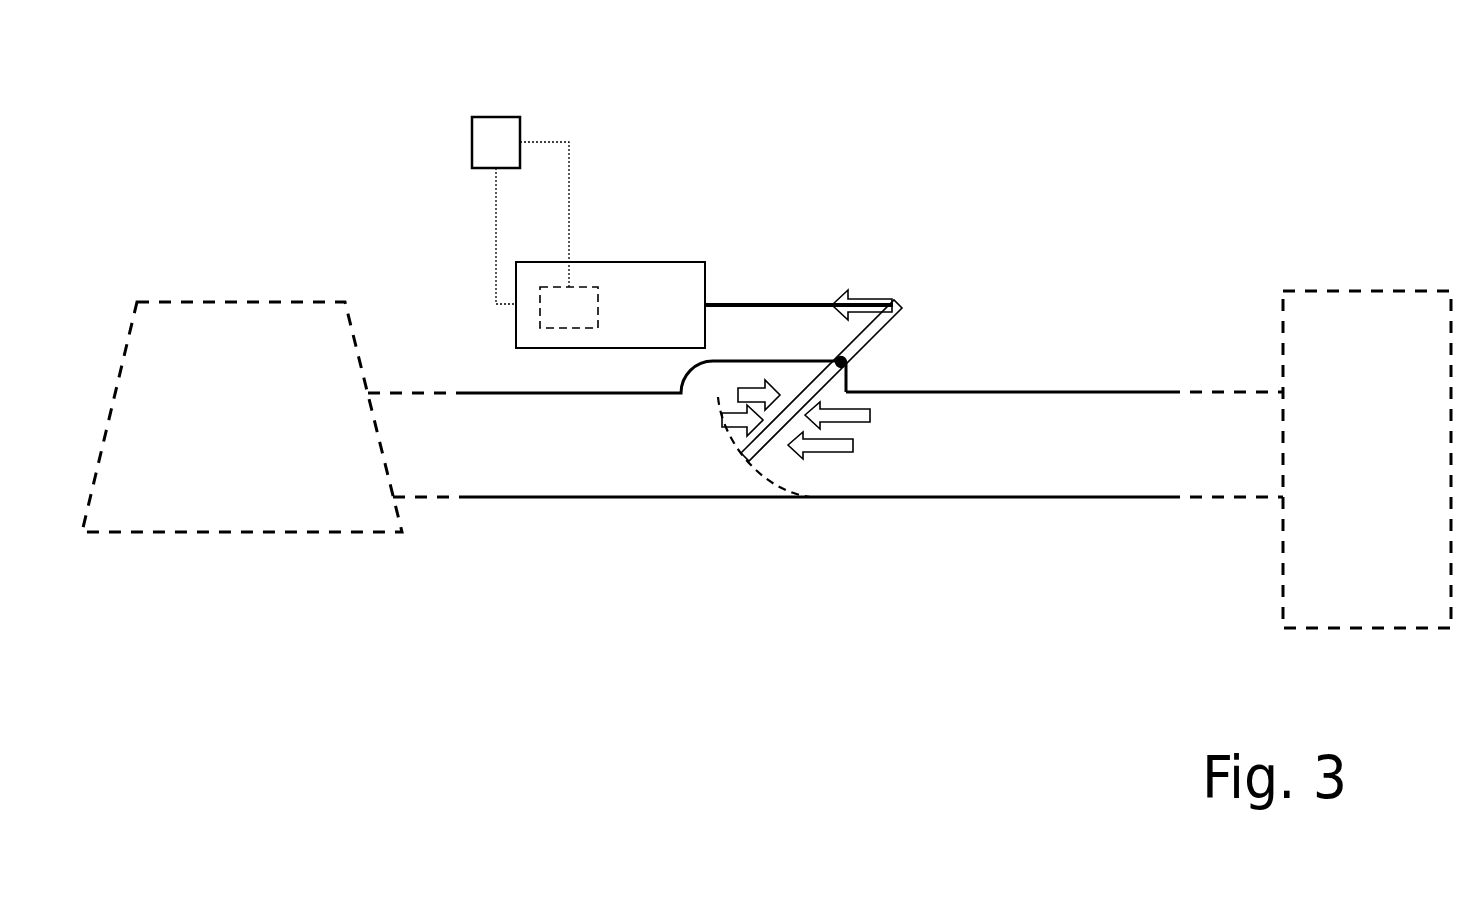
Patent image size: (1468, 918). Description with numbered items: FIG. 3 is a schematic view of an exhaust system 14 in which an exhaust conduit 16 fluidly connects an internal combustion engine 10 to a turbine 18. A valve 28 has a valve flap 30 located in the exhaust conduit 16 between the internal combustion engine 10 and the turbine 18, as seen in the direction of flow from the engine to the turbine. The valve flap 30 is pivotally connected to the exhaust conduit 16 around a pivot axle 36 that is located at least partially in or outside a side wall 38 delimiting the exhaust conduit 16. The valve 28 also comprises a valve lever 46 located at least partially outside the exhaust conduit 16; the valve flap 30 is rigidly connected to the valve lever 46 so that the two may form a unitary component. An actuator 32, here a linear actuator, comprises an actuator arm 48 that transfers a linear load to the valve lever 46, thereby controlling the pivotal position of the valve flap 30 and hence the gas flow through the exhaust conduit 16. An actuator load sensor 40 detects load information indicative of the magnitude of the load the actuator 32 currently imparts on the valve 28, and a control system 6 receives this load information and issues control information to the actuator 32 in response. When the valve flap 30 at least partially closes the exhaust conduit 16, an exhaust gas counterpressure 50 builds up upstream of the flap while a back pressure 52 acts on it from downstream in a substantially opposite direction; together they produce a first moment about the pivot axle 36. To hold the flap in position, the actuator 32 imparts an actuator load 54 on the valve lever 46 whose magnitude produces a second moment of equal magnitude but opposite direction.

The control system 6 is at (520, 210).
The internal combustion engine 10 is at (1286, 275).
The exhaust system 14 is at (825, 484).
The exhaust conduit 16 is at (1057, 368).
The turbine 18 is at (228, 275).
The valve 28 is at (814, 351).
The valve flap 30 is at (867, 425).
The actuator 32 is at (630, 261).
The pivot axle 36 is at (850, 366).
The side wall 38 is at (817, 359).
The actuator load sensor 40 is at (569, 307).
The valve lever 46 is at (890, 338).
The actuator arm 48 is at (740, 293).
The exhaust gas counterpressure 50 is at (870, 440).
The back pressure 52 is at (710, 427).
The actuator load 54 is at (873, 288).